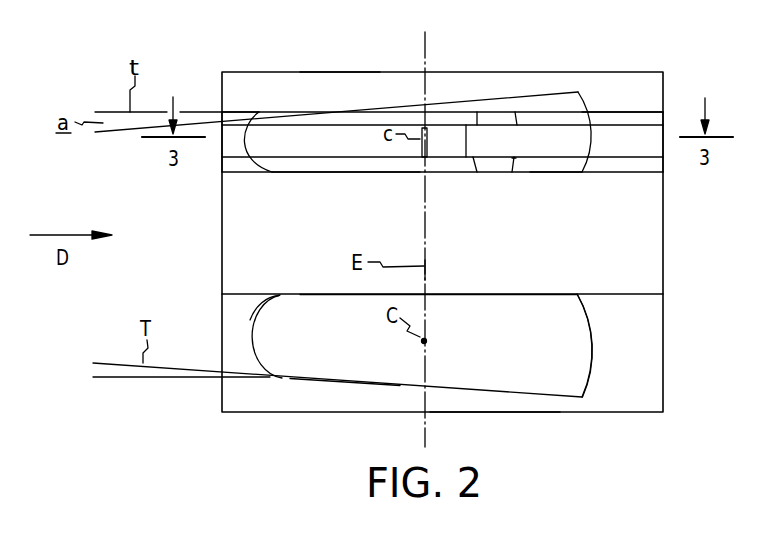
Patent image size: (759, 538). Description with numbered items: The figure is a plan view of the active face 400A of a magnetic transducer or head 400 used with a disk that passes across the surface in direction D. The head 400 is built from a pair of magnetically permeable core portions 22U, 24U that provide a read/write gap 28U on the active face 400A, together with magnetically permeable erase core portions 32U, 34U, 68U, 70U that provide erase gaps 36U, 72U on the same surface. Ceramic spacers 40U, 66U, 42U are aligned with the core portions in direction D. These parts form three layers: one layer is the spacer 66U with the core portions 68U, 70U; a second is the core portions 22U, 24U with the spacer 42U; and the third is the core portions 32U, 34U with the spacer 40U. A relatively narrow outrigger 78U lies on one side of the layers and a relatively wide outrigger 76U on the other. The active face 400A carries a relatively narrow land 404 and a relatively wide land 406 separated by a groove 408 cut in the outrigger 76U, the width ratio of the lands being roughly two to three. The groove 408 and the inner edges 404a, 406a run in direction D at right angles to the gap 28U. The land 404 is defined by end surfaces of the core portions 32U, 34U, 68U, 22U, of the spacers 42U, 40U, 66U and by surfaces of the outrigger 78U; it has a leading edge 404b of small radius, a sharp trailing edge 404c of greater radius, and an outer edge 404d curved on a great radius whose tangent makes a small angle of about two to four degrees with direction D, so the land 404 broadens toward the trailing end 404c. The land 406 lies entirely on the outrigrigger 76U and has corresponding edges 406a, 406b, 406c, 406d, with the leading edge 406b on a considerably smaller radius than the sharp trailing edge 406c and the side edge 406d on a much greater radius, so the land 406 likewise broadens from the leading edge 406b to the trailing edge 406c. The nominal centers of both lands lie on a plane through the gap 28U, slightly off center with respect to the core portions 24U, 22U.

The head 400 is at (473, 242).
The active face 400A is at (480, 262).
The narrow land 404 is at (442, 96).
The inner edge of land 404 404a is at (573, 173).
The leading end or edge of land 404 404b is at (243, 146).
The trailing end or edge of land 404 404c is at (591, 144).
The outer edge of land 404 404d is at (336, 76).
The wide land 406 is at (342, 375).
The inner edge of land 406 406a is at (558, 292).
The leading edge of land 406 406b is at (247, 323).
The trailing edge of land 406 406c is at (592, 342).
The side edge of land 406 406d is at (345, 418).
The groove 408 is at (513, 279).
The magnetically permeable core portion 22U is at (200, 161).
The magnetically permeable core portion 24U is at (445, 147).
The read/write gap 28U is at (421, 145).
The erase core portion 32U is at (555, 166).
The erase core portion 34U is at (493, 166).
The erase gap 36U is at (517, 158).
The ceramic spacer 40U is at (346, 201).
The ceramic spacer 42U is at (688, 159).
The ceramic spacer 66U is at (260, 66).
The erase core portion 68U is at (602, 118).
The erase core portion 70U is at (490, 73).
The erase gap 72U is at (507, 117).
The wide outrigger 76U is at (492, 412).
The narrow outrigger 78U is at (340, 46).